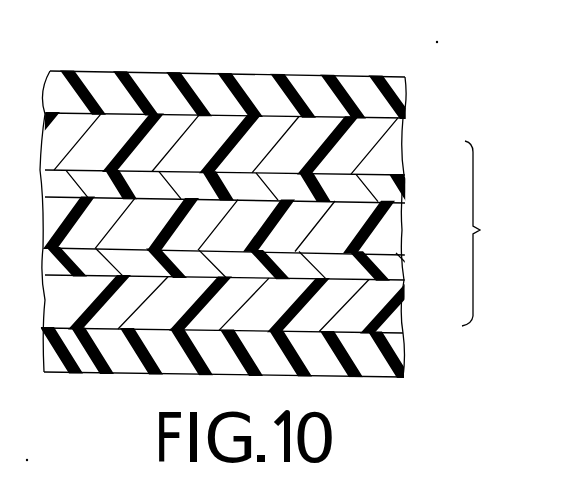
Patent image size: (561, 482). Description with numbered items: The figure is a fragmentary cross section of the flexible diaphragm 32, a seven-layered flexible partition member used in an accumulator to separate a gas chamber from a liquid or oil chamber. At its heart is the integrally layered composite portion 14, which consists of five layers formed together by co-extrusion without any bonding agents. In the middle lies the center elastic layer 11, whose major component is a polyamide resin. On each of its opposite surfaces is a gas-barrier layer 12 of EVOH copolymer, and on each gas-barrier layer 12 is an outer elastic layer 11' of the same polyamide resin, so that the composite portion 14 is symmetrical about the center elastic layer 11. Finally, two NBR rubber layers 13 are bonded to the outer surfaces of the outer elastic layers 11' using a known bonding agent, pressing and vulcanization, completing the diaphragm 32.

The flexible diaphragm 32 is at (218, 63).
The rubber layer 13 is at (402, 100).
The outer elastic layer 11' is at (230, 222).
The gas-barrier layer 12 is at (408, 193).
The center elastic layer 11 is at (248, 225).
The integrally layered composite portion 14 is at (488, 233).